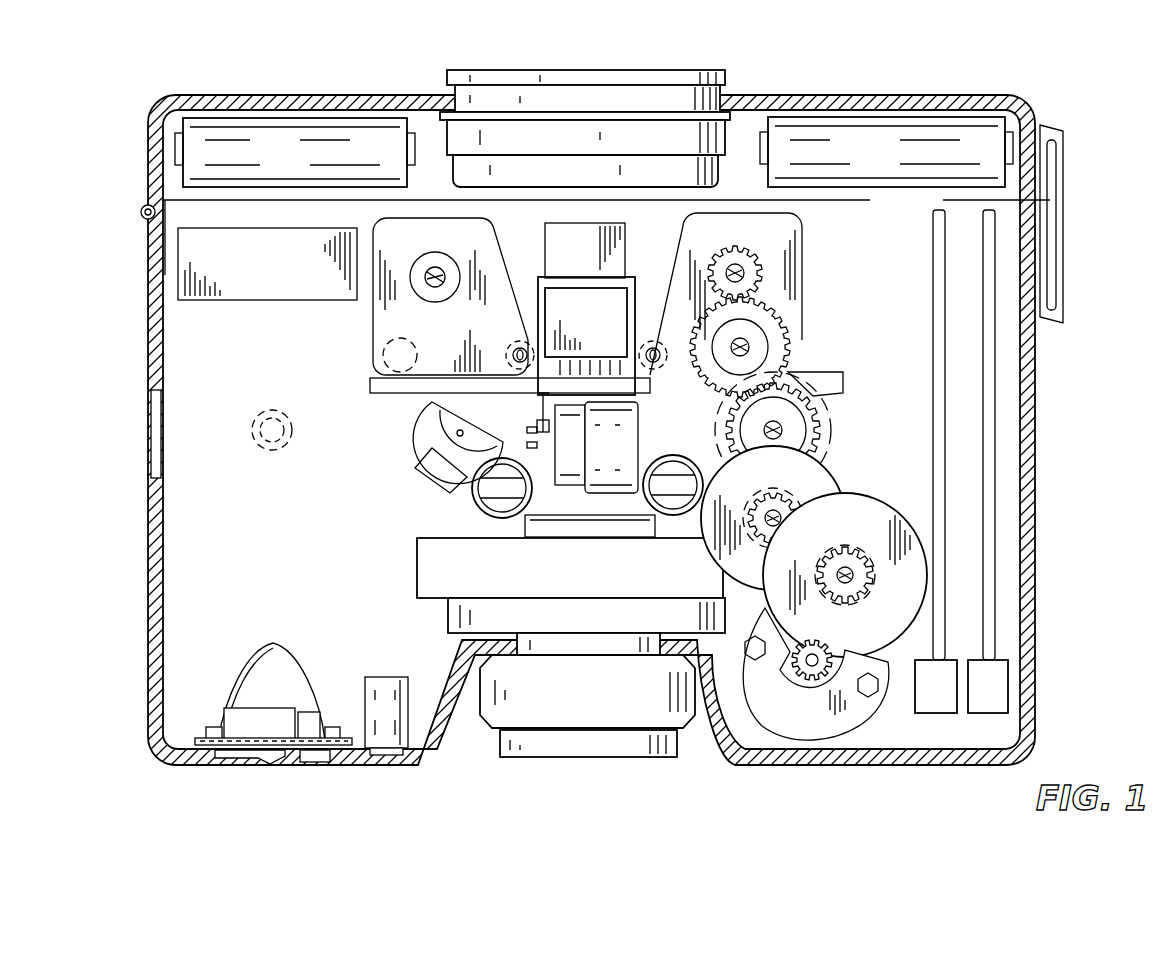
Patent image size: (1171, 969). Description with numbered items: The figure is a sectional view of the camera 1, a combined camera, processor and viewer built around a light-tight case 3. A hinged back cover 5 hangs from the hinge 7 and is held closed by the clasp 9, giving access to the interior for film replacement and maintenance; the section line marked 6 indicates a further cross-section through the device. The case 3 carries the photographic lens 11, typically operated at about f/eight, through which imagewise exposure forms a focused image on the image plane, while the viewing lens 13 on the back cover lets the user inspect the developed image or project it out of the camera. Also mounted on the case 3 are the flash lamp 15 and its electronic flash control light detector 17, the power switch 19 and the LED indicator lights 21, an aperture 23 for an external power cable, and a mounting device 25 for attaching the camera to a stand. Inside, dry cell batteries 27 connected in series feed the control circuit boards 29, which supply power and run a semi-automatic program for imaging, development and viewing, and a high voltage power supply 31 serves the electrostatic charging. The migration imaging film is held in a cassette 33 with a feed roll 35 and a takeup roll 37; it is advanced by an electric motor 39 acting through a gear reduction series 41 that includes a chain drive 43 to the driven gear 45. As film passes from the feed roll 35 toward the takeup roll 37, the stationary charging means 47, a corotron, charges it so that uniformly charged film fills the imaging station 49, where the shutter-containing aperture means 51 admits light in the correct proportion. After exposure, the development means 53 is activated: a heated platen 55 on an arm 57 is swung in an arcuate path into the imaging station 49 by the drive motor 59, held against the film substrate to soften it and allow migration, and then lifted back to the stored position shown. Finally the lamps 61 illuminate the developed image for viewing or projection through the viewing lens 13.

The camera 1 is at (1055, 592).
The light-tight case 3 is at (146, 585).
The hinged back cover 5 is at (246, 84).
The section line 6- 6 is at (522, 241).
The hinge 7 is at (146, 220).
The clasp 9 is at (1063, 203).
The photographic lens 11 is at (588, 750).
The viewing lens 13 is at (706, 78).
The flash lamp 15 is at (241, 674).
The electronic flash control light detector 17 is at (392, 764).
The power switch 19 is at (268, 762).
The LED indicator lights 21 is at (320, 764).
The aperture 23 is at (292, 413).
The mounting device 25 is at (147, 428).
The dry cell batteries 27 is at (335, 140).
The control circuit boards 29 is at (986, 500).
The power supply 31 is at (292, 290).
The cassette 33 is at (810, 224).
The feed roll 35 is at (430, 262).
The takeup roll 37 is at (763, 262).
The electric motor 39 is at (860, 706).
The gear reduction series 41 is at (848, 455).
The chain drive 43 is at (800, 378).
The driven gear 45 is at (742, 265).
The charging means 47 is at (421, 413).
The imaging station 49 is at (612, 400).
The aperture means 51 is at (570, 556).
The development means 53 is at (636, 252).
The heated platen 55 is at (510, 279).
The arm 57 is at (636, 294).
The drive motor 59 is at (630, 468).
The lamps 61 is at (480, 492).